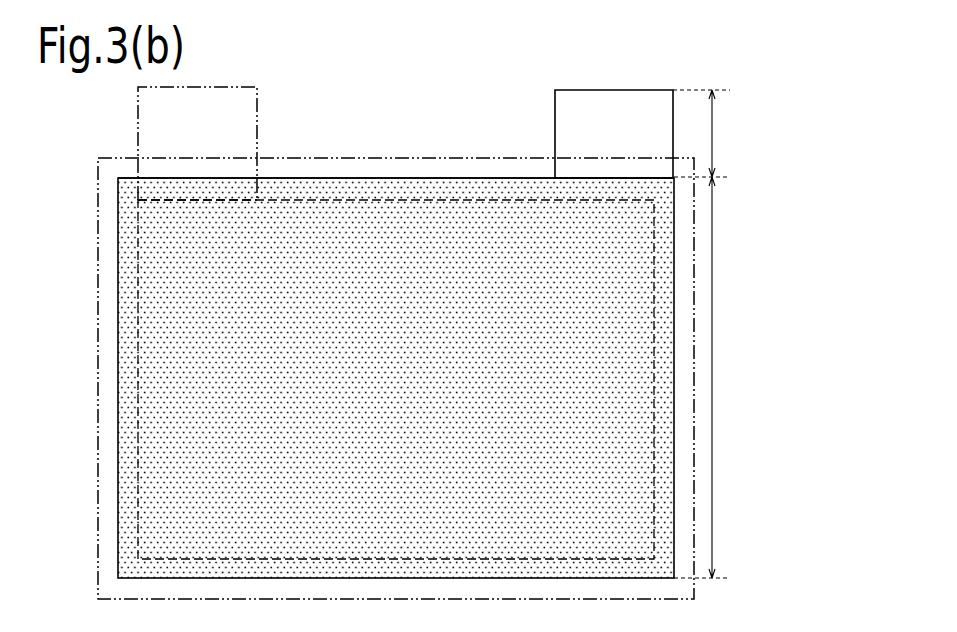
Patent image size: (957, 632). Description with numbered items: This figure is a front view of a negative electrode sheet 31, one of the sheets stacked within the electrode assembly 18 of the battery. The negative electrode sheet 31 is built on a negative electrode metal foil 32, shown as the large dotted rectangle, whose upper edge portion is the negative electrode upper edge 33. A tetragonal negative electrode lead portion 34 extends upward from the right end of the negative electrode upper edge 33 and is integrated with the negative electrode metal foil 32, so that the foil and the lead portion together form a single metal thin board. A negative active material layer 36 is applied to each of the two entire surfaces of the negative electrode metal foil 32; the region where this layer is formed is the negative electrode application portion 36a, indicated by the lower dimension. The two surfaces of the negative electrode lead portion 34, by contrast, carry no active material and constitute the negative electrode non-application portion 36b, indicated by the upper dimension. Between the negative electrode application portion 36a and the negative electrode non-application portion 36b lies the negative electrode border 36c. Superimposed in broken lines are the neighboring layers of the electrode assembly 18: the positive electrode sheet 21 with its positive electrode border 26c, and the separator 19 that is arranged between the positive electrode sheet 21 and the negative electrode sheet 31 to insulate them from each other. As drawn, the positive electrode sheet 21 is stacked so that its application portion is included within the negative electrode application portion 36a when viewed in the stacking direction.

The electrode assembly 18 is at (789, 88).
The negative electrode sheet 31 is at (747, 56).
The negative active material layer 36 is at (130, 455).
The negative electrode upper edge 33 is at (388, 177).
The negative electrode metal foil 32 is at (127, 372).
The separator 19 is at (308, 158).
The positive electrode sheet 21 is at (257, 108).
The positive electrode border 26c is at (168, 200).
The negative electrode lead portion 34 is at (587, 107).
The negative electrode border 36c is at (573, 177).
The negative electrode non-application portion 36b is at (716, 132).
The negative electrode application portion 36a is at (714, 378).